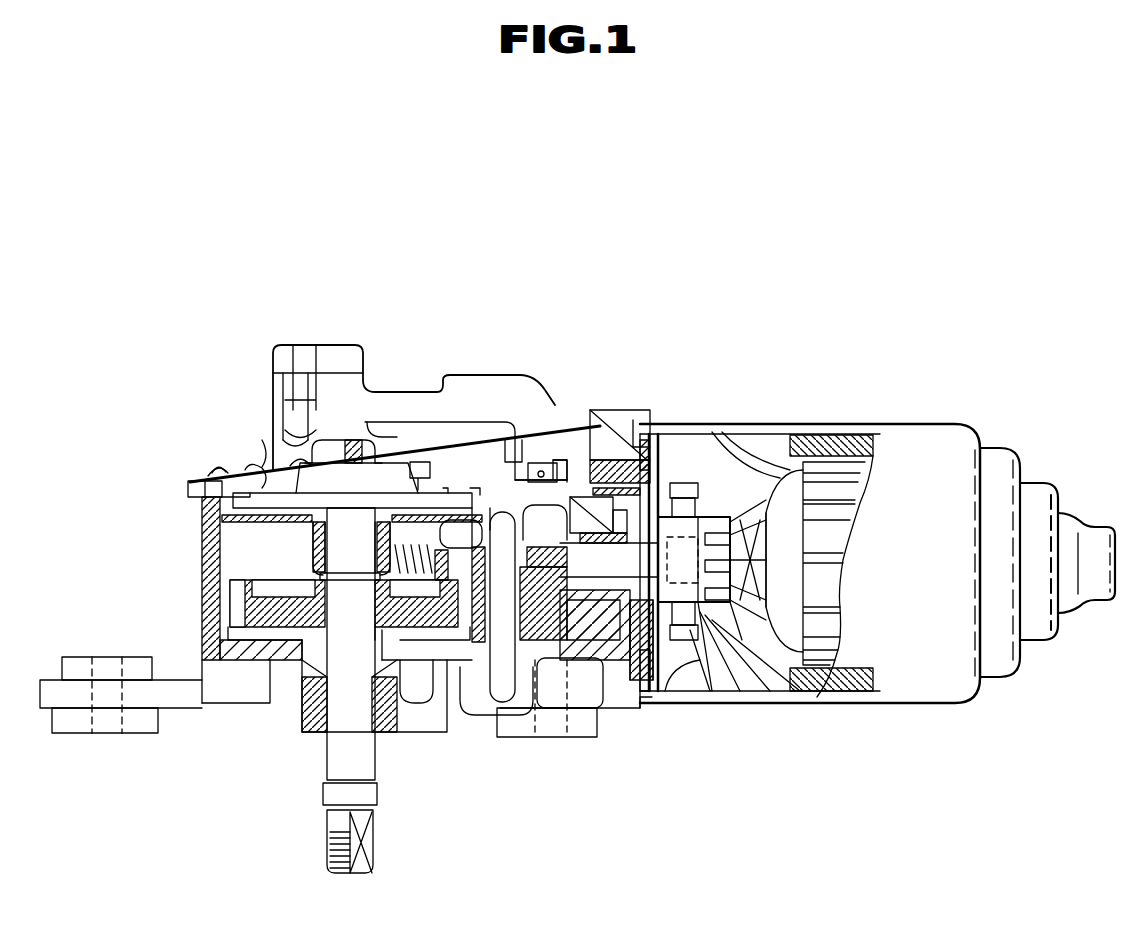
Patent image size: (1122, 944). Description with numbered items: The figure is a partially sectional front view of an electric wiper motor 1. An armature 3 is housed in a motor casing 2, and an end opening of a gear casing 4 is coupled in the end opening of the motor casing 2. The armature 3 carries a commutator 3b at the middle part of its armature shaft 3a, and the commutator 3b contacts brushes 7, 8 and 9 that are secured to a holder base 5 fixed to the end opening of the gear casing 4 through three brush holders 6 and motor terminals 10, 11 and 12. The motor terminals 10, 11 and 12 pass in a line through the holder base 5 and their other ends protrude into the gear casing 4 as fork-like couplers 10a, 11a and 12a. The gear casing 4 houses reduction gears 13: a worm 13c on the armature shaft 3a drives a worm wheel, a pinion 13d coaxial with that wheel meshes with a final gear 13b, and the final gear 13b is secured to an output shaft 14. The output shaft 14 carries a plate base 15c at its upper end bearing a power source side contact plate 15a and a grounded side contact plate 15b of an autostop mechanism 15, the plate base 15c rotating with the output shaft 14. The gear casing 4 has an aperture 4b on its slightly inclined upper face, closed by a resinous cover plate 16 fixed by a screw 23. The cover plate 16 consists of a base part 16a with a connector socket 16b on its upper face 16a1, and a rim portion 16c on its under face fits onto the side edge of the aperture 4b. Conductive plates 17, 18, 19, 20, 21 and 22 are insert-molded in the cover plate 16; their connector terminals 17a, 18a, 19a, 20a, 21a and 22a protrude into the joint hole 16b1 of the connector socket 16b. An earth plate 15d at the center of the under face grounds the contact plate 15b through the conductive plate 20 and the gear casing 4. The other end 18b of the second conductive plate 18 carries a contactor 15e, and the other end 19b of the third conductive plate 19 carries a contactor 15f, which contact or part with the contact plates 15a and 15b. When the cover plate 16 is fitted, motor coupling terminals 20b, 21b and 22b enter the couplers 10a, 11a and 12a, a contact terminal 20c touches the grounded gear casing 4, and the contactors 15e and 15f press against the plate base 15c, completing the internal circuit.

The electric wiper motor 1 is at (468, 172).
The motor casing 2 is at (855, 423).
The armature 3 is at (780, 424).
The armature shaft 3a is at (620, 695).
The commutator 3b is at (800, 697).
The gear casing 4 is at (657, 432).
The aperture 4b is at (222, 518).
The holder base 5 is at (664, 697).
The brush holders 6 is at (687, 424).
The brush 7 is at (718, 424).
The brush 8 is at (765, 424).
The brush 9 is at (735, 640).
The motor terminal 10 is at (687, 448).
The coupler 10a is at (672, 322).
The motor terminal 11 is at (687, 448).
The coupler 11a is at (672, 322).
The motor terminal 12 is at (665, 420).
The coupler 12a is at (635, 415).
The reduction gears 13 is at (440, 665).
The final gear 13b is at (230, 600).
The worm 13c is at (400, 690).
The pinion 13d is at (575, 735).
The output shaft 14 is at (340, 700).
The autostop mechanism 15 is at (458, 460).
The power source side contact plate 15a is at (450, 440).
The grounded side contact plate 15b is at (253, 473).
The plate base 15c is at (235, 475).
The earth plate 15d is at (305, 522).
The contactor 15e is at (515, 645).
The contactor 15f is at (535, 710).
The cover plate 16 is at (192, 480).
The base part 16a is at (545, 426).
The upper face 16a1 is at (425, 440).
The connector socket 16b is at (345, 405).
The joint hole 16b1 is at (285, 345).
The rim portion 16c is at (188, 500).
The conductive plate 17 is at (345, 305).
The connector terminal 17a is at (373, 328).
The second conductive plate 18 is at (345, 305).
The connector terminal 18a is at (373, 328).
The another end 18b is at (546, 316).
The third conductive plate 19 is at (298, 430).
The connector terminal 19a is at (310, 430).
The another end 19b is at (515, 420).
The conductive plate 20 is at (177, 363).
The connector terminal 20a is at (147, 384).
The motor coupling terminal 20b is at (655, 303).
The contact terminal 20c is at (403, 440).
The conductive plate 21 is at (177, 363).
The connector terminal 21a is at (147, 384).
The motor coupling terminal 21b is at (655, 303).
The conductive plate 22 is at (270, 430).
The connector terminal 22a is at (257, 467).
The motor coupling terminal 22b is at (565, 415).
The screw 23 is at (217, 463).